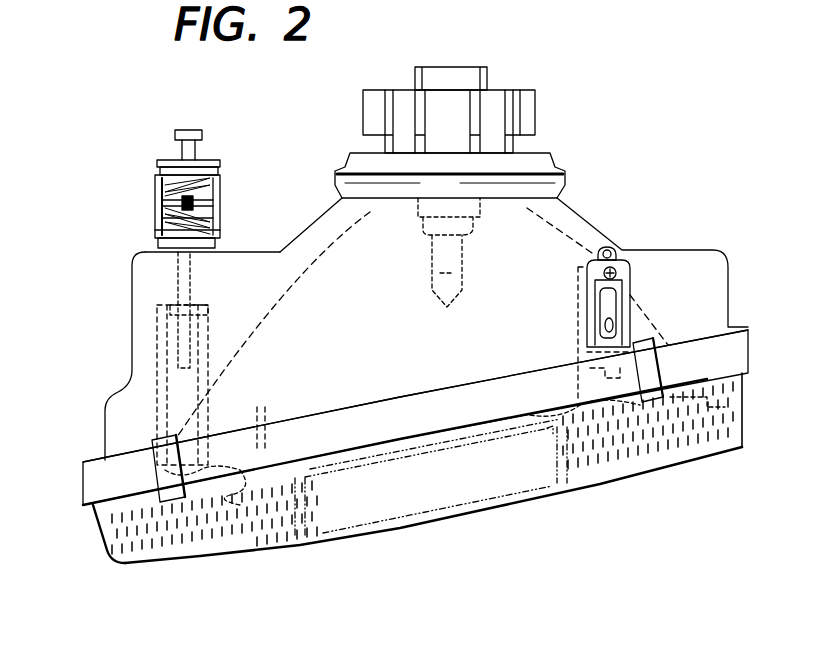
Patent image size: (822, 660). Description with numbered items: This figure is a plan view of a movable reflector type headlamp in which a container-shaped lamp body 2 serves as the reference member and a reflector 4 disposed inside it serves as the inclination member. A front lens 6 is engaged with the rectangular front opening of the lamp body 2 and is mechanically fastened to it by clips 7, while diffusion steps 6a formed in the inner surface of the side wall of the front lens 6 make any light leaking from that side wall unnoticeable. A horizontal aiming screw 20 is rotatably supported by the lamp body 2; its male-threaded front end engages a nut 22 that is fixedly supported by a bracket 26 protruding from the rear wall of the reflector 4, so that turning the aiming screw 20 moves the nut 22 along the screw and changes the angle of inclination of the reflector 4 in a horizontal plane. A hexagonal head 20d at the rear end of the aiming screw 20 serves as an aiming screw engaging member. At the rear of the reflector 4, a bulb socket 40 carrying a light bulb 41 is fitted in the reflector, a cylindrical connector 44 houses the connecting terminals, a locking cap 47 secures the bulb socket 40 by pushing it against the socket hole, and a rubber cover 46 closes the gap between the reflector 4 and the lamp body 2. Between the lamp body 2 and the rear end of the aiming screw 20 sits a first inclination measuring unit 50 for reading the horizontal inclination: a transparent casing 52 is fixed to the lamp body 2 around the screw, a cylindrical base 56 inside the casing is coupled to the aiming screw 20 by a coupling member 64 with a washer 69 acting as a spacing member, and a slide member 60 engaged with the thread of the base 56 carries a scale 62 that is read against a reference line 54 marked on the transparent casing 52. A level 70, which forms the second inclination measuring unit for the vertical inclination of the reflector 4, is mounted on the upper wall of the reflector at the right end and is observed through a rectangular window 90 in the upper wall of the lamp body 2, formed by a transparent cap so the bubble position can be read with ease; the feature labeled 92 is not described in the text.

The lamp body 2 is at (600, 228).
The reflector 4 is at (562, 232).
The front lens 6 is at (437, 527).
The diffusion steps 6a is at (212, 558).
The clips 7 is at (152, 440).
The horizontal aiming screw 20 is at (172, 140).
The hexagonal head 20d is at (198, 130).
The nut 22 is at (168, 318).
The bracket 26 is at (157, 348).
The bulb socket 40 is at (410, 87).
The light bulb 41 is at (455, 273).
The cylindrical connector 44 is at (472, 85).
The rubber cover 46 is at (547, 155).
The locking cap 47 is at (530, 88).
The first inclination measuring unit 50 is at (147, 195).
The transparent casing 52 is at (220, 227).
The reference line 54 is at (160, 217).
The cylindrical base 56 is at (213, 190).
The slide member 60 is at (212, 212).
The scale 62 is at (185, 183).
The coupling member 64 is at (157, 165).
The washer 69 is at (158, 173).
The level 70 is at (630, 268).
The rectangular window 90 is at (632, 282).
The rim edge 92 is at (633, 293).